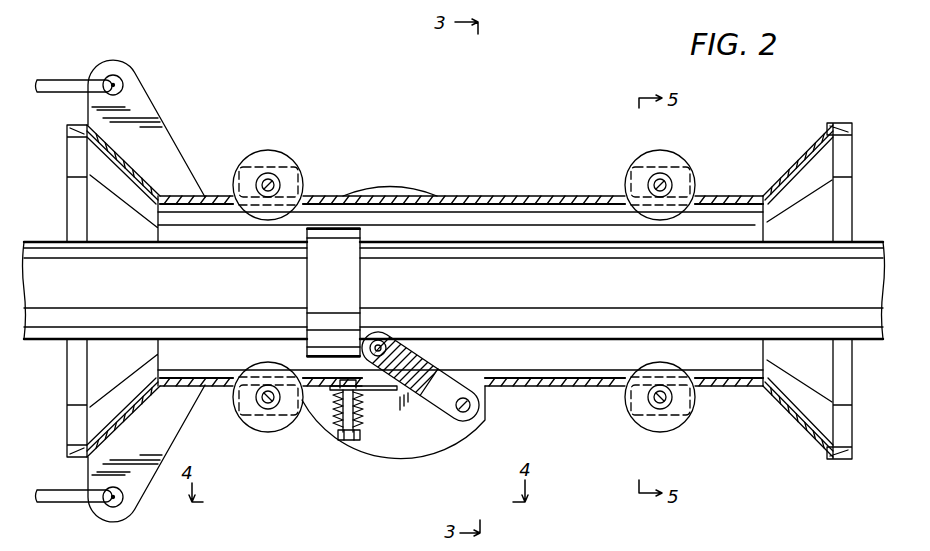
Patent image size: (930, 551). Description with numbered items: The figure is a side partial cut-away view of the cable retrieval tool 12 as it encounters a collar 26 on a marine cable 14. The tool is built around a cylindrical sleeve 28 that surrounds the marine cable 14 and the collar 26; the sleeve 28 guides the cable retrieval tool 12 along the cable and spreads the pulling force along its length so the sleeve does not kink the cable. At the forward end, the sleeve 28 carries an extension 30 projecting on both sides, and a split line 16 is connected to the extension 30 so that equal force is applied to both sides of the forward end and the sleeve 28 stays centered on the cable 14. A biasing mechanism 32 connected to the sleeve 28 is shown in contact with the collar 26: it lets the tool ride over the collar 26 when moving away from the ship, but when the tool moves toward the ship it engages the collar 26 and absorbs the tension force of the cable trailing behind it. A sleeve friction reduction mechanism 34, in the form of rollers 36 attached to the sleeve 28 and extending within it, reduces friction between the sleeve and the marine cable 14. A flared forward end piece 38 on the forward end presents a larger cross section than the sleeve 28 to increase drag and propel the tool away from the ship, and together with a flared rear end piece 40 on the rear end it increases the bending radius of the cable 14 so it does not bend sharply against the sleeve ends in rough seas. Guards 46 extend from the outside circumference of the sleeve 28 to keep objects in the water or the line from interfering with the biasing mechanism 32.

The cable retrieval tool 12 is at (528, 196).
The marine cable 14 is at (583, 231).
The line 16 is at (55, 78).
The collar 26 is at (340, 227).
The cylindrical sleeve 28 is at (440, 196).
The extension 30 is at (148, 90).
The biasing mechanism 32 is at (434, 420).
The sleeve friction reduction mechanism 34 is at (252, 141).
The rollers 36 is at (283, 153).
The flared forward end piece 38 is at (67, 160).
The flared rear end piece 40 is at (853, 145).
The guards 46 is at (457, 440).